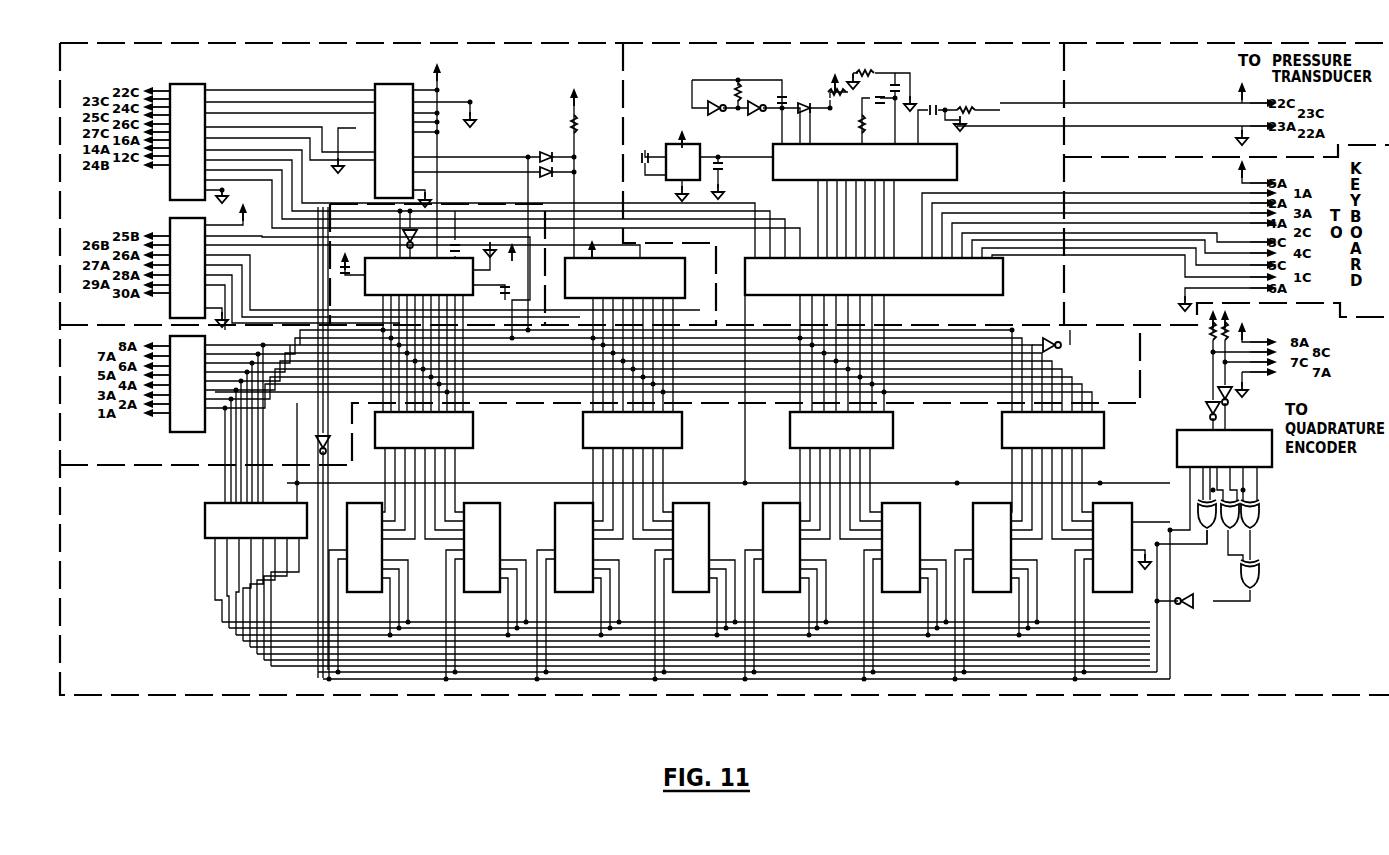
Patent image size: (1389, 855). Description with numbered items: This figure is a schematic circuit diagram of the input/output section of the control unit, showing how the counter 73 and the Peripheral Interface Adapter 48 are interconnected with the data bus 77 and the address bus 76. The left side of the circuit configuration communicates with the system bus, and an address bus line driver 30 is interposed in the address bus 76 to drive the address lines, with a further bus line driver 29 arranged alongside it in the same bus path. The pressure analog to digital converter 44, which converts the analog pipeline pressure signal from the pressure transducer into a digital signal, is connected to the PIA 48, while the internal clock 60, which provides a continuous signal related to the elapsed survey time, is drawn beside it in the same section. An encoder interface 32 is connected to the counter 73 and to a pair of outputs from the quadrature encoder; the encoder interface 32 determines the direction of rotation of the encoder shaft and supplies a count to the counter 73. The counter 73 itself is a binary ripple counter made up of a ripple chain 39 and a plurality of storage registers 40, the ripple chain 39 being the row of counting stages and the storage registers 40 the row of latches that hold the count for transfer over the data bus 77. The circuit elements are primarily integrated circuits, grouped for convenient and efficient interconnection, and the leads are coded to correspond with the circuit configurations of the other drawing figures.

The counter 73 is at (164, 622).
The address bus 76 is at (316, 74).
The data bus 77 is at (122, 459).
The address bus line driver 30 is at (199, 152).
The input latch 29 is at (199, 395).
The internal clock 60 is at (430, 287).
The analog to digital converter 44 is at (876, 173).
The Peripheral Interface Adapter 48 is at (884, 287).
The storage registers 40 is at (556, 445).
The ripple chain 39 is at (318, 575).
The encoder interface 32 is at (1236, 459).